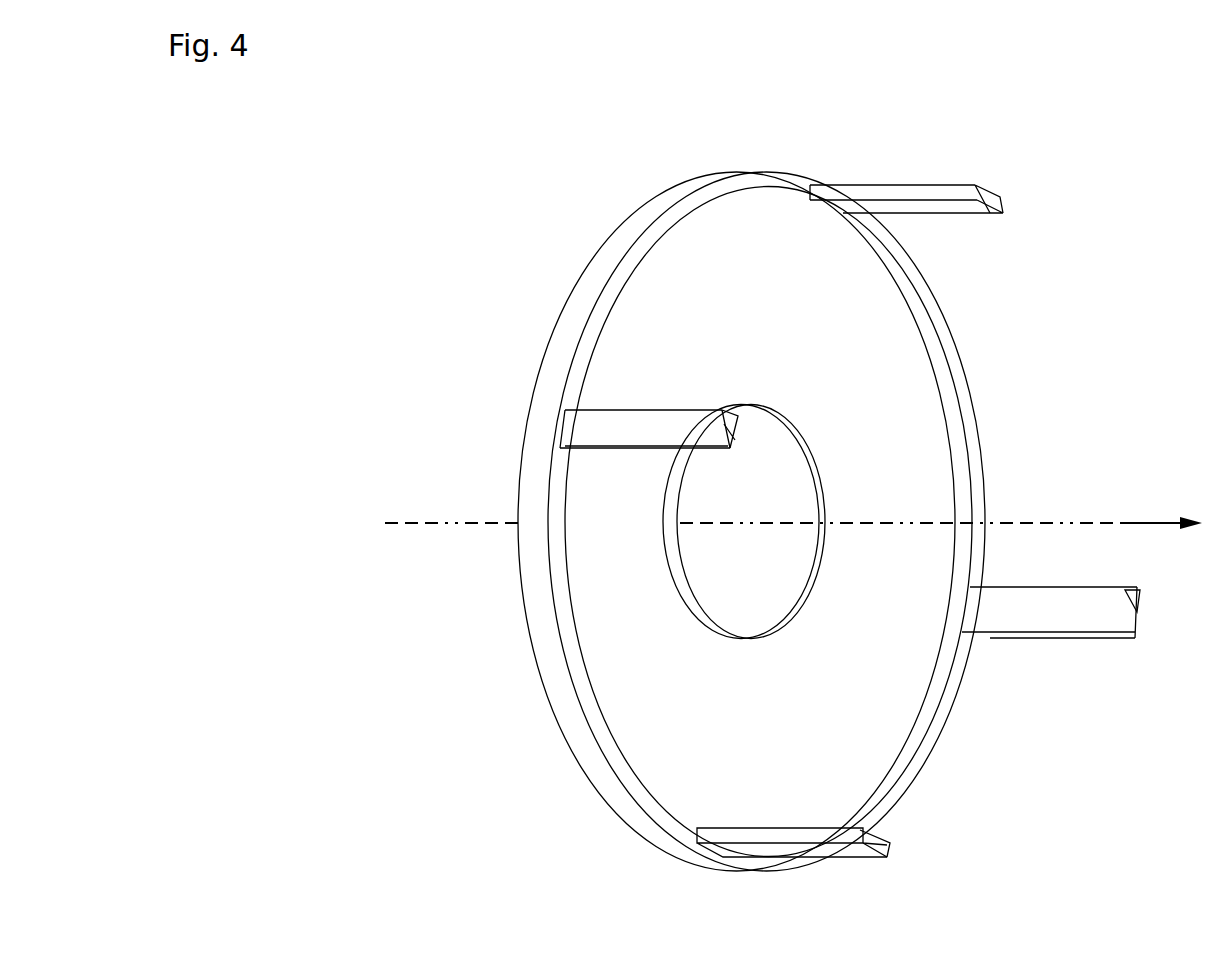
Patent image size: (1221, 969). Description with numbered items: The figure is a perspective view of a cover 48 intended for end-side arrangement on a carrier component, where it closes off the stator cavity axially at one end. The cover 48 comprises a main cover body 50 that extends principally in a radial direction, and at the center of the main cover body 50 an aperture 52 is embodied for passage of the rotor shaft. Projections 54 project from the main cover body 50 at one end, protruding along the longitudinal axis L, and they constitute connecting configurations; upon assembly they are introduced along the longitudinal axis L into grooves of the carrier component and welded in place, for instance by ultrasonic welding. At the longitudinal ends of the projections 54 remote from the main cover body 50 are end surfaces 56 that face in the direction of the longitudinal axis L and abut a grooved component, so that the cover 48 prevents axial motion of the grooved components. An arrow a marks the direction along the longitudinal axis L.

The cover 48 is at (457, 217).
The main cover body 50 is at (756, 723).
The aperture 52 is at (761, 503).
The projections 54 is at (905, 190).
The end surfaces 56 is at (988, 190).
The longitudinal axis L is at (872, 522).
The axial direction a is at (1160, 522).